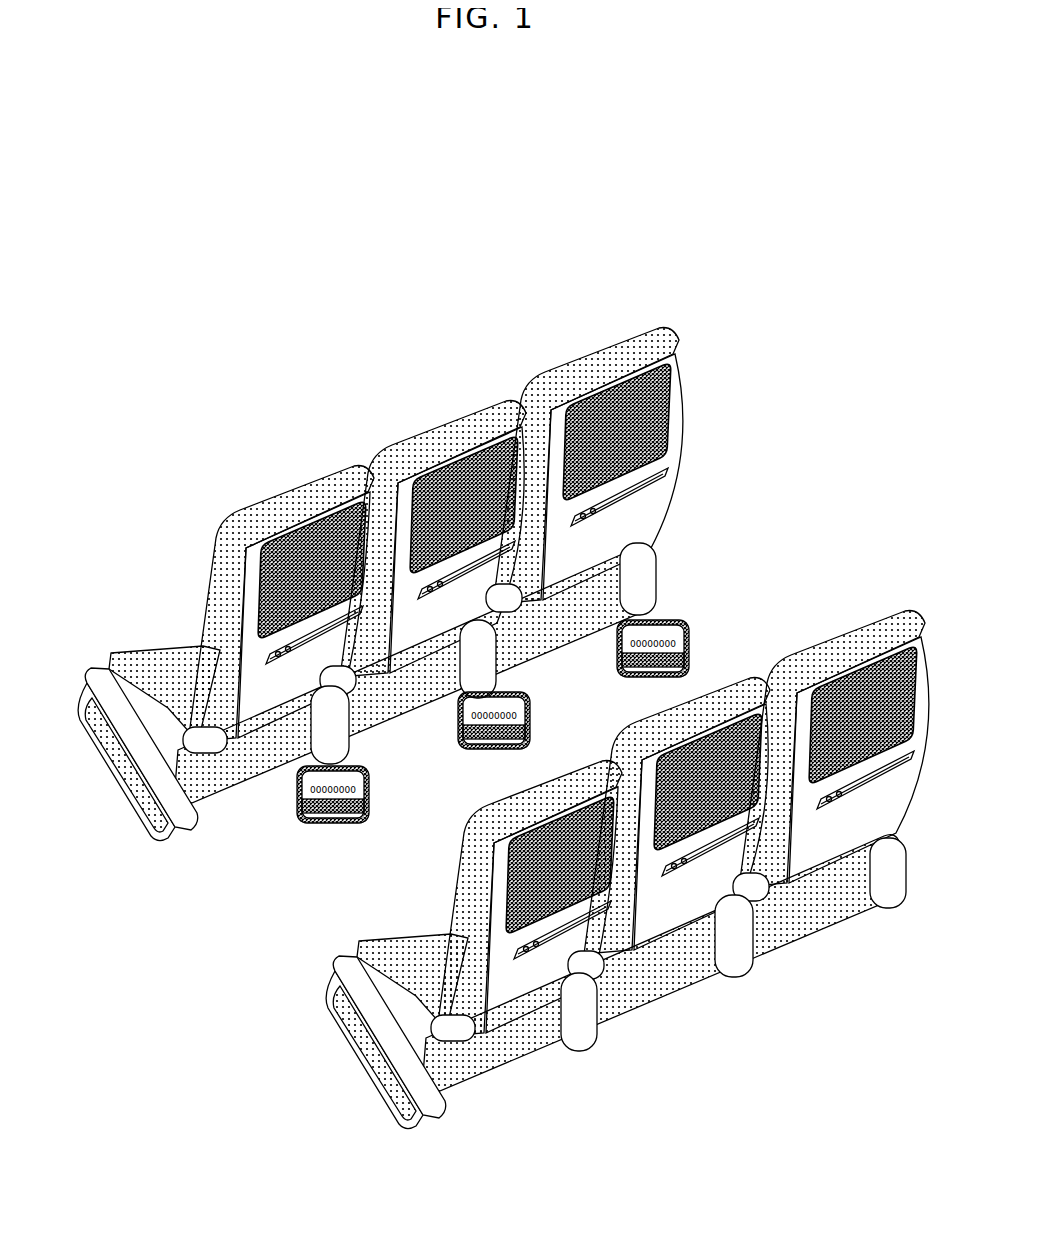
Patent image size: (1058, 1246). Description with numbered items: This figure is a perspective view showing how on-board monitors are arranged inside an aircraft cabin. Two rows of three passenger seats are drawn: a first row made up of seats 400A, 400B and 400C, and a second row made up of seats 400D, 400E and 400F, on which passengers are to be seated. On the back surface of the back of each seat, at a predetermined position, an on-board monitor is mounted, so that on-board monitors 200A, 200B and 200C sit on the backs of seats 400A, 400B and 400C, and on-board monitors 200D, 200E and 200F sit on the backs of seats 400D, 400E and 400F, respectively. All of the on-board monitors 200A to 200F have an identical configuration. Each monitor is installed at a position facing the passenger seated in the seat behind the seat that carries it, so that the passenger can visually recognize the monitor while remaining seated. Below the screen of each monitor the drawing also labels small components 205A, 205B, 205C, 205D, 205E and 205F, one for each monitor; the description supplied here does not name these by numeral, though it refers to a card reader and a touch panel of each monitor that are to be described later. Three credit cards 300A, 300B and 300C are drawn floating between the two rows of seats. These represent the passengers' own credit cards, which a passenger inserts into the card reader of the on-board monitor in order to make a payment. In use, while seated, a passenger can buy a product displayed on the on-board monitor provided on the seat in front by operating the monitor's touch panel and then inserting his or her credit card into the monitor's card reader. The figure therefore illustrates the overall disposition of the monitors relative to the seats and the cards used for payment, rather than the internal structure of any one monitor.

The on-board monitor 200A is at (278, 535).
The on-board monitor 200B is at (450, 456).
The on-board monitor 200C is at (595, 383).
The on-board monitor 200D is at (478, 818).
The on-board monitor 200E is at (635, 750).
The on-board monitor 200F is at (850, 655).
The seat display unit 205A is at (320, 620).
The seat display unit 205B is at (477, 550).
The seat display unit 205C is at (625, 470).
The seat display unit 205D is at (572, 905).
The seat display unit 205E is at (725, 835).
The seat display unit 205F is at (868, 768).
The credit card 300A is at (289, 788).
The credit card 300B is at (450, 720).
The credit card 300C is at (609, 644).
The seat 400A is at (308, 490).
The seat 400B is at (470, 405).
The seat 400C is at (622, 340).
The seat 400D is at (490, 1040).
The seat 400E is at (650, 952).
The seat 400F is at (800, 880).